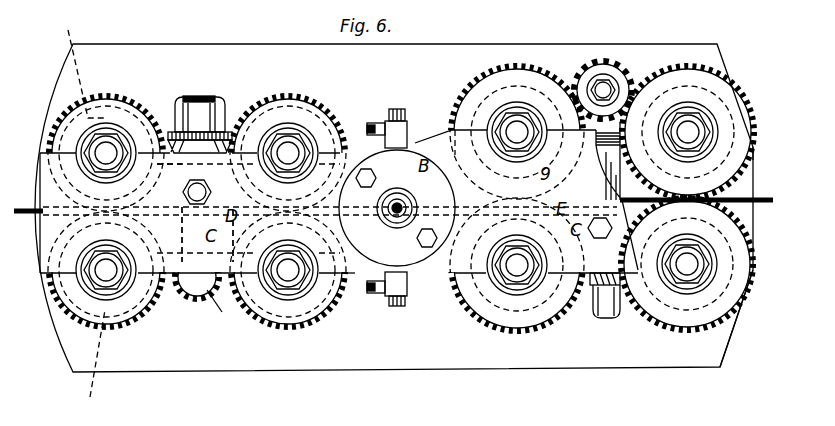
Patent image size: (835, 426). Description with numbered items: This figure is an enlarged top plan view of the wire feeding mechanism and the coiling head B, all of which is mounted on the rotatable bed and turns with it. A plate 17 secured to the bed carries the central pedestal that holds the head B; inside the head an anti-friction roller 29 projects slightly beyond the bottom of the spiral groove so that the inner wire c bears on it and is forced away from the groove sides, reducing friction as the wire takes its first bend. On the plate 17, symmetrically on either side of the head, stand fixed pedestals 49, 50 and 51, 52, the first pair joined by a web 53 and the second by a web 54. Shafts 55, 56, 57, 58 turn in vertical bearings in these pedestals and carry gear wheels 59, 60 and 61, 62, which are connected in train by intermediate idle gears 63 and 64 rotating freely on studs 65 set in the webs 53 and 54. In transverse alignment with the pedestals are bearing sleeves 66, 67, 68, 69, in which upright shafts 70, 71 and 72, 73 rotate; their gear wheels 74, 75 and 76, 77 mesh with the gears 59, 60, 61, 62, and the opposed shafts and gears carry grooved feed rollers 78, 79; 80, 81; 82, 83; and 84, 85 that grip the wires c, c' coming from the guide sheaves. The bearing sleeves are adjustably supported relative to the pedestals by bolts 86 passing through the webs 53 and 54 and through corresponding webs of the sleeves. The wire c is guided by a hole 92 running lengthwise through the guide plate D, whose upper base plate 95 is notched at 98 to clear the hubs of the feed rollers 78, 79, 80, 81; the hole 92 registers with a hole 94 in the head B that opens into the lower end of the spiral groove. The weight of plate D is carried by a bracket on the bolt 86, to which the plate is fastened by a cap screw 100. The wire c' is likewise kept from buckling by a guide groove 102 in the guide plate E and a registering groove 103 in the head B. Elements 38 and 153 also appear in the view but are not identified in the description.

The plate 17 is at (765, 211).
The anti-friction roller 29 is at (405, 206).
The hub 38 is at (393, 212).
The fixed pedestal 49 is at (91, 363).
The fixed pedestal 50 is at (286, 330).
The fixed pedestal 51 is at (702, 90).
The fixed pedestal 52 is at (548, 67).
The web 53 is at (204, 234).
The web 54 is at (619, 181).
The shaft 55 is at (118, 287).
The shaft 56 is at (263, 311).
The shaft 57 is at (688, 133).
The shaft 58 is at (524, 130).
The gear wheel 59 is at (68, 310).
The gear wheel 60 is at (311, 325).
The gear wheel 61 is at (741, 101).
The gear wheel 62 is at (501, 64).
The intermediate idle gear 63 is at (202, 315).
The intermediate idle gear 64 is at (617, 65).
The stud 65 is at (223, 309).
The bearing sleeve 66 is at (80, 64).
The bearing sleeve 67 is at (310, 95).
The bearing sleeve 68 is at (740, 323).
The bearing sleeve 69 is at (550, 367).
The upright shaft 70 is at (107, 155).
The upright shaft 71 is at (30, 218).
The upright shaft 72 is at (687, 266).
The upright shaft 73 is at (568, 310).
The gear wheel 74 is at (62, 112).
The gear wheel 75 is at (257, 105).
The gear wheel 76 is at (740, 297).
The gear wheel 77 is at (479, 326).
The feed roller 78 is at (72, 292).
The feed roller 79 is at (143, 118).
The feed roller 80 is at (337, 291).
The feed roller 81 is at (320, 122).
The feed roller 82 is at (741, 151).
The feed roller 83 is at (707, 313).
The feed roller 84 is at (477, 96).
The feed roller 85 is at (508, 334).
The bolt 86 is at (204, 112).
The hole or opening 92 is at (212, 193).
The hole or opening 94 is at (397, 208).
The upper plate 95 is at (169, 184).
The notch or recess 98 is at (450, 300).
The cap screw 100 is at (208, 176).
The guide groove 102 is at (605, 196).
The guide groove 103 is at (409, 208).
The plate 153 is at (360, 261).